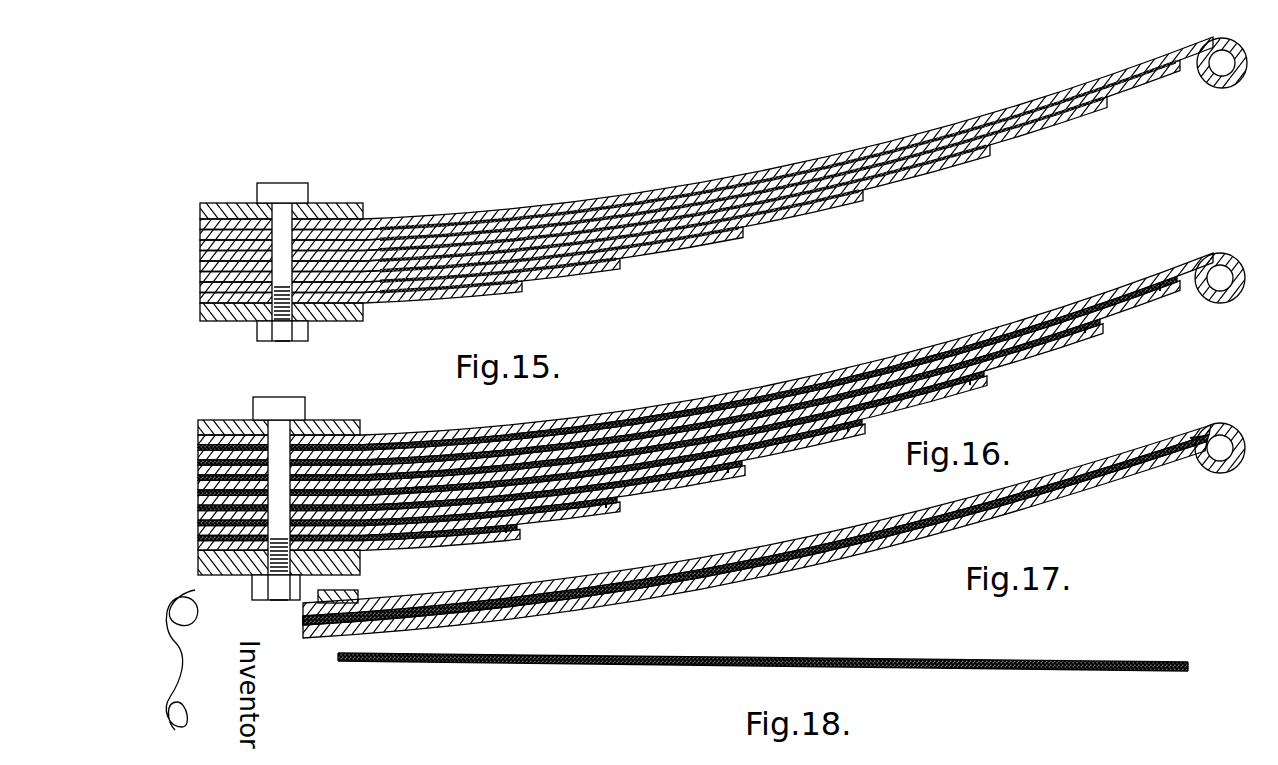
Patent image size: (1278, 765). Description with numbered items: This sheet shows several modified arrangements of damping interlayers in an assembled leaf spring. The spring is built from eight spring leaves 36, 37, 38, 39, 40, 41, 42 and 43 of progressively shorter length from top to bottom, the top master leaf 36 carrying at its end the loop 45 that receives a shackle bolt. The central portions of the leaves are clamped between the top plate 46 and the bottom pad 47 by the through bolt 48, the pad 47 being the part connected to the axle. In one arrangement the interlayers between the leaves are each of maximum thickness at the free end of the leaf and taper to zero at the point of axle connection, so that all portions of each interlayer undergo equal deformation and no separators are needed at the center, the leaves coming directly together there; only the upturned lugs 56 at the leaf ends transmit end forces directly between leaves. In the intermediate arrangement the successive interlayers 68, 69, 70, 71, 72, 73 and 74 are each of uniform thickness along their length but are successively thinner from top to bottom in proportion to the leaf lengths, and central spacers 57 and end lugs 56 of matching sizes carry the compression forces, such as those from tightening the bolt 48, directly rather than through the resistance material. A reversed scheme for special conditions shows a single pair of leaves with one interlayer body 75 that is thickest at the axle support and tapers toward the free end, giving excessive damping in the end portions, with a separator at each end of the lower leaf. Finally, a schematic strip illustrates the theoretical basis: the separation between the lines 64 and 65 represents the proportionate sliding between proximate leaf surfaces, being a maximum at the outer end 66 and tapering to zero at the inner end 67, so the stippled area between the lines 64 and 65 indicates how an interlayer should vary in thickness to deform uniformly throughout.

In FIG. 15, the master leaf 36 is at (885, 147).
In FIG. 16, the master leaf 36 is at (945, 333).
In FIG. 17, the master leaf 36 is at (1033, 482).
In FIG. 15, the spring leaf 37 is at (850, 165).
In FIG. 16, the spring leaf 37 is at (1000, 330).
In FIG. 17, the spring leaf 37 is at (1015, 510).
In FIG. 15, the spring leaf 38 is at (823, 180).
In FIG. 16, the spring leaf 38 is at (1000, 375).
In FIG. 15, the spring leaf 39 is at (785, 228).
In FIG. 16, the spring leaf 39 is at (940, 410).
In FIG. 15, the spring leaf 40 is at (700, 248).
In FIG. 16, the spring leaf 40 is at (820, 458).
In FIG. 15, the spring leaf 41 is at (655, 268).
In FIG. 16, the spring leaf 41 is at (710, 497).
In FIG. 15, the spring leaf 42 is at (590, 288).
In FIG. 16, the spring leaf 42 is at (598, 527).
In FIG. 15, the spring leaf 43 is at (490, 302).
In FIG. 16, the spring leaf 43 is at (480, 548).
In FIG. 15, the loop 45 is at (1215, 42).
In FIG. 16, the loop 45 is at (1218, 256).
In FIG. 17, the loop 45 is at (1222, 424).
In FIG. 15, the top plate 46 is at (238, 212).
In FIG. 16, the top plate 46 is at (200, 426).
In FIG. 15, the bottom pad 47 is at (348, 318).
In FIG. 16, the bottom pad 47 is at (358, 568).
In FIG. 15, the through bolt 48 is at (300, 192).
In FIG. 16, the through bolt 48 is at (257, 408).
In FIG. 17, the through bolt 48 is at (352, 594).
In FIG. 15, the upturned lugs 56 is at (520, 292).
In FIG. 16, the upturned lugs 56 is at (518, 545).
In FIG. 17, the upturned lugs 56 is at (1172, 455).
In FIG. 16, the central spacers 57 is at (205, 468).
In FIG. 17, the central spacers 57 is at (305, 620).
In FIG. 18, the line 64 is at (823, 657).
In FIG. 18, the line 65 is at (876, 672).
In FIG. 18, the end 66 is at (1190, 665).
In FIG. 18, the end 67 is at (336, 659).
In FIG. 16, the interlayer 68 is at (880, 370).
In FIG. 16, the interlayer 69 is at (838, 396).
In FIG. 16, the interlayer 70 is at (805, 419).
In FIG. 16, the interlayer 71 is at (785, 468).
In FIG. 16, the interlayer 72 is at (668, 505).
In FIG. 16, the interlayer 73 is at (560, 530).
In FIG. 16, the interlayer 74 is at (425, 549).
In FIG. 17, the interlayer body 75 is at (845, 535).